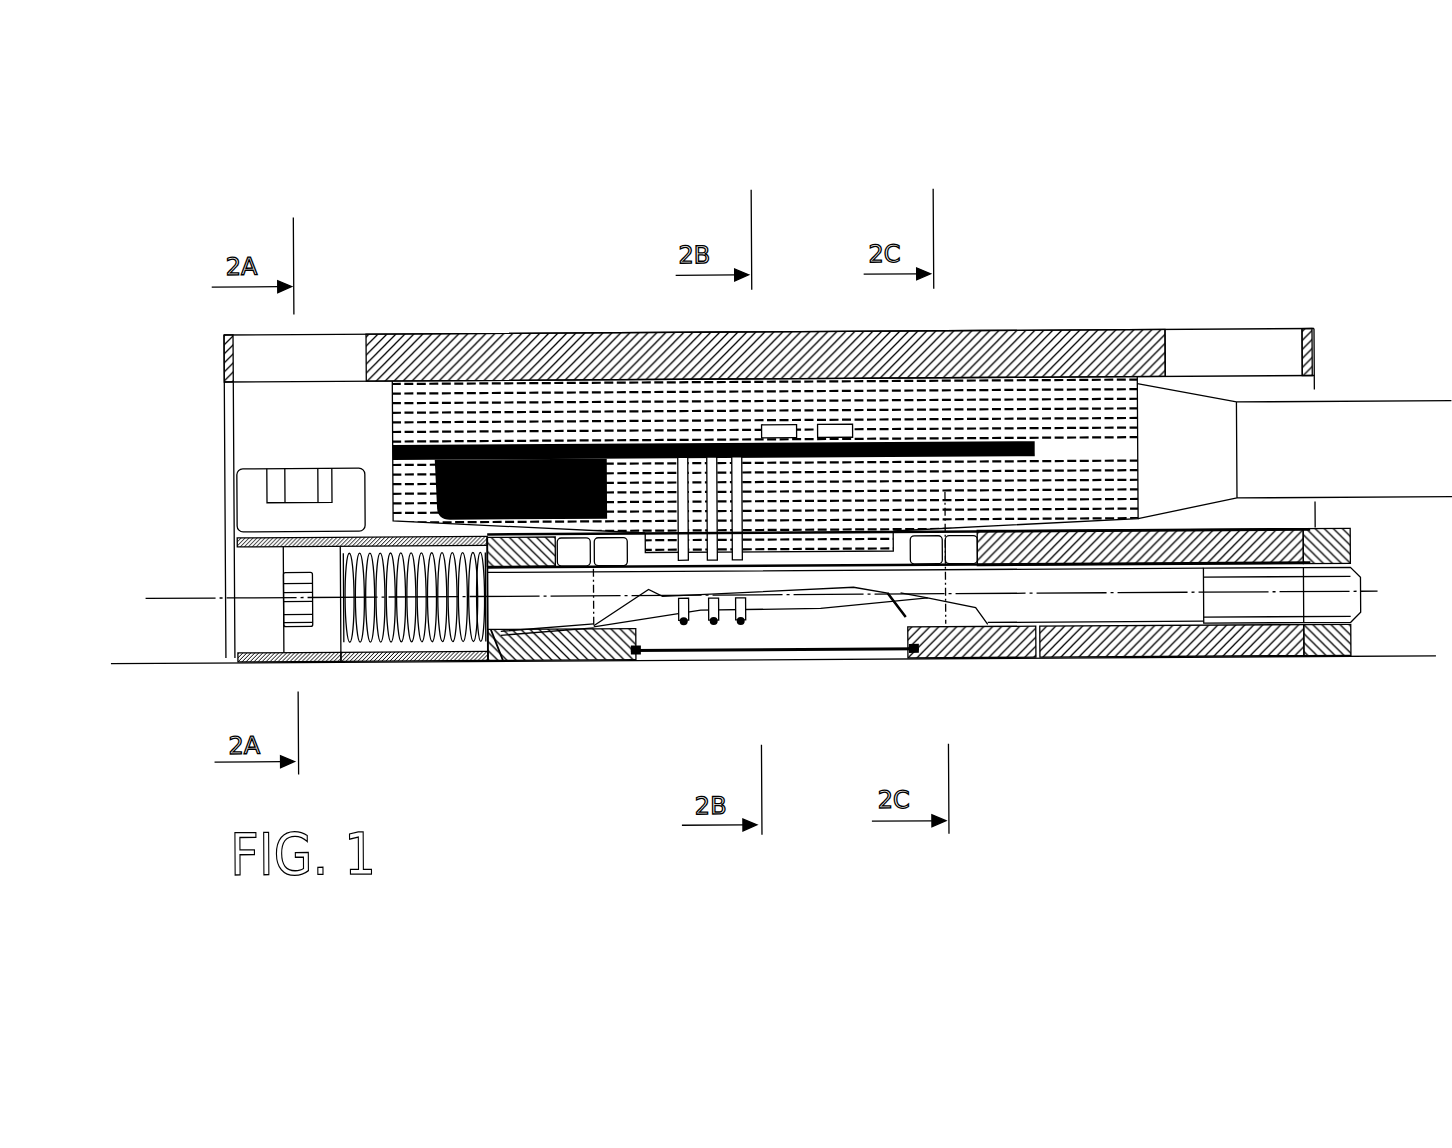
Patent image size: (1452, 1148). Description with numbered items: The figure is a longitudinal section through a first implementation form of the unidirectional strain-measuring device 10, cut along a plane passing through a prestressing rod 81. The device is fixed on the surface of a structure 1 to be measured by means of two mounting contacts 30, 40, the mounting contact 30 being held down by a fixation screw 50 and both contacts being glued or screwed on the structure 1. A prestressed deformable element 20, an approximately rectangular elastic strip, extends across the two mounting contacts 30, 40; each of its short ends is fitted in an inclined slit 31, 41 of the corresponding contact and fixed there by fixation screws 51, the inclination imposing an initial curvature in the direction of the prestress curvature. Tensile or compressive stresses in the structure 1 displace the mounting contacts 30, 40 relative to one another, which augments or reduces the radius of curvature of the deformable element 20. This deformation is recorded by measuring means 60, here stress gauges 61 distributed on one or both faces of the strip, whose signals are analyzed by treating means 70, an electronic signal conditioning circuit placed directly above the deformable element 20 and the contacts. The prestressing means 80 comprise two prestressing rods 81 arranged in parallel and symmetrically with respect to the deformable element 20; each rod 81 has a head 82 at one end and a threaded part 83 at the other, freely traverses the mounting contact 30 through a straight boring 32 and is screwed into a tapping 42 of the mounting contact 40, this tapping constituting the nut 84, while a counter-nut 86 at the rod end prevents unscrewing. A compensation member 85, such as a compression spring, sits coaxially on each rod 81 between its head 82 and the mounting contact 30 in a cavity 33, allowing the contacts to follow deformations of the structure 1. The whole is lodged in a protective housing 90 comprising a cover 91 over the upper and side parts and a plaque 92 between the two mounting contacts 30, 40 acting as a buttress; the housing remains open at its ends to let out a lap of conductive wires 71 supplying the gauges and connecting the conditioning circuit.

The structure to be measured 1 is at (770, 701).
The strain-measuring device 10 is at (1115, 248).
The deformable element 20 is at (837, 622).
The mounting contact 30 is at (522, 655).
The slit 31 is at (565, 660).
The straight boring 32 is at (497, 643).
The cavity 33 is at (420, 645).
The mounting contact 40 is at (1153, 655).
The slit 41 is at (1035, 628).
The tapping 42 is at (1204, 605).
The fixation screw 50 is at (250, 504).
The fixation screws 51 is at (970, 560).
The measuring means 60 is at (718, 587).
The stress gauges 61 is at (736, 626).
The treating means 70 is at (1052, 413).
The conductive wires 71 is at (1365, 423).
The prestressing means 80 is at (262, 584).
The prestressing rod 81 is at (592, 660).
The head 82 is at (307, 635).
The threaded part 83 is at (1242, 588).
The nut 84 is at (1303, 658).
The compensation member 85 is at (350, 641).
The counter-nut 86 is at (1352, 660).
The protective housing 90 is at (1317, 348).
The cover 91 is at (428, 333).
The plaque 92 is at (885, 622).